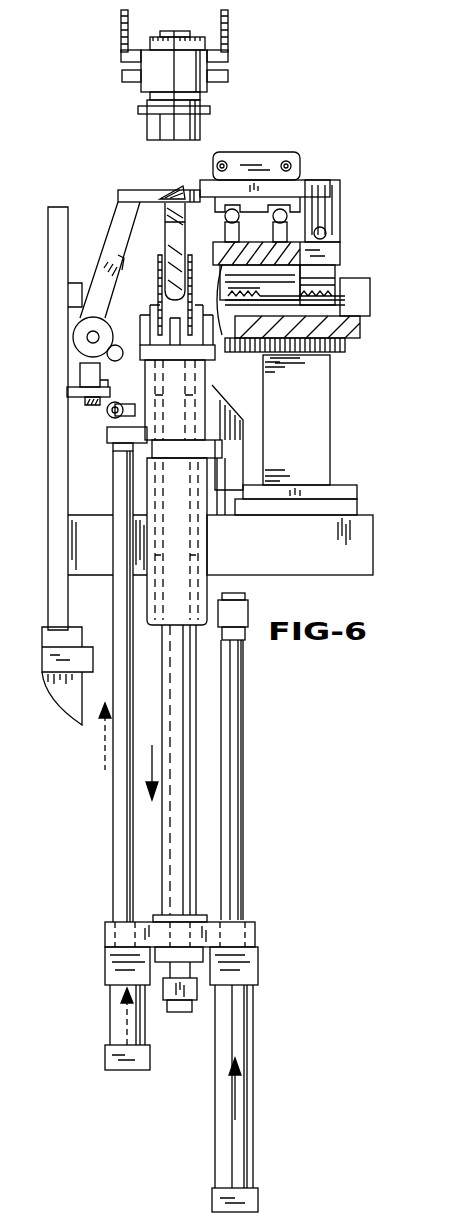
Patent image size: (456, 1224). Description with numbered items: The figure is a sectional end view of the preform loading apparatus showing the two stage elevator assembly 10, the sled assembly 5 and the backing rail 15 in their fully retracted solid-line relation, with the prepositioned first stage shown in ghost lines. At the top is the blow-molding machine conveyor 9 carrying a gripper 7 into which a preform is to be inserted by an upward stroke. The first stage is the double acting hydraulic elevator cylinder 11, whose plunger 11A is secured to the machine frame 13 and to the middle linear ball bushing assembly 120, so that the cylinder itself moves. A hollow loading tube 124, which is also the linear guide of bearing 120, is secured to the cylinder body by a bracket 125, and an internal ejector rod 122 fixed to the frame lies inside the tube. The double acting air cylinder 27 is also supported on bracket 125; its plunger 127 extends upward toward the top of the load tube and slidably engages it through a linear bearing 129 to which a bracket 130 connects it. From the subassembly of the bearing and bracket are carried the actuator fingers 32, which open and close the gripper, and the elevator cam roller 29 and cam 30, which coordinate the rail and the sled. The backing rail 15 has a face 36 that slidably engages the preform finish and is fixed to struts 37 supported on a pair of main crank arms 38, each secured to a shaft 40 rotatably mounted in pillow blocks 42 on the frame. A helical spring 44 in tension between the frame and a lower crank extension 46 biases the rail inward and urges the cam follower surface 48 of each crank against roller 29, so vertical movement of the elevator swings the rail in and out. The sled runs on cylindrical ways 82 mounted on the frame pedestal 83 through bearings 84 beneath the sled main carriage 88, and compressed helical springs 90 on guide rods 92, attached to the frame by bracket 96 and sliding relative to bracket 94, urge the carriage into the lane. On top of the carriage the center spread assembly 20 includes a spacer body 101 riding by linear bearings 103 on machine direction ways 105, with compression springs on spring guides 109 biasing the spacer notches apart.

The sled assembly 5 is at (304, 141).
The gripper 7 is at (158, 125).
The blow-molding machine conveyor 9 is at (235, 23).
The elevator assembly 10 is at (248, 790).
The hydraulic elevator cylinder 11 is at (240, 1022).
The plunger 11A is at (240, 768).
The machine frame 13 is at (55, 606).
The backing rail 15 is at (152, 190).
The center spread assembly 20 is at (291, 152).
The air cylinder 27 is at (110, 1017).
The elevator cam roller 29 is at (70, 366).
The elevator cam 30 is at (232, 413).
The actuator fingers 32 is at (163, 298).
The rail face 36 is at (172, 192).
The struts 37 is at (127, 190).
The main crank arm 38 is at (115, 212).
The shaft 40 is at (85, 337).
The pillow block 42 is at (72, 300).
The helical spring 44 is at (85, 402).
The lower crank extension 46 is at (85, 385).
The cam follower surface 48 is at (112, 268).
The sled ways 82 is at (372, 300).
The frame pedestal 83 is at (332, 468).
The bearings 84 is at (325, 278).
The sled main carriage 88 is at (340, 256).
The compressed helical springs 90 is at (345, 340).
The spring guide rod 92 is at (312, 335).
The bracket 94 is at (224, 336).
The bracket 96 is at (372, 284).
The spacer body 101 is at (300, 162).
The linear bearings 103 is at (290, 205).
The machine direction ways 105 is at (296, 228).
The spring guides 109 is at (283, 165).
The linear ball bushing assembly 120 is at (178, 560).
The internal ejector rod 122 is at (168, 838).
The loading tube 124 is at (188, 678).
The bracket 125 is at (257, 940).
The plunger 127 is at (115, 800).
The linear bearing 129 is at (238, 438).
The bracket 130 is at (173, 418).